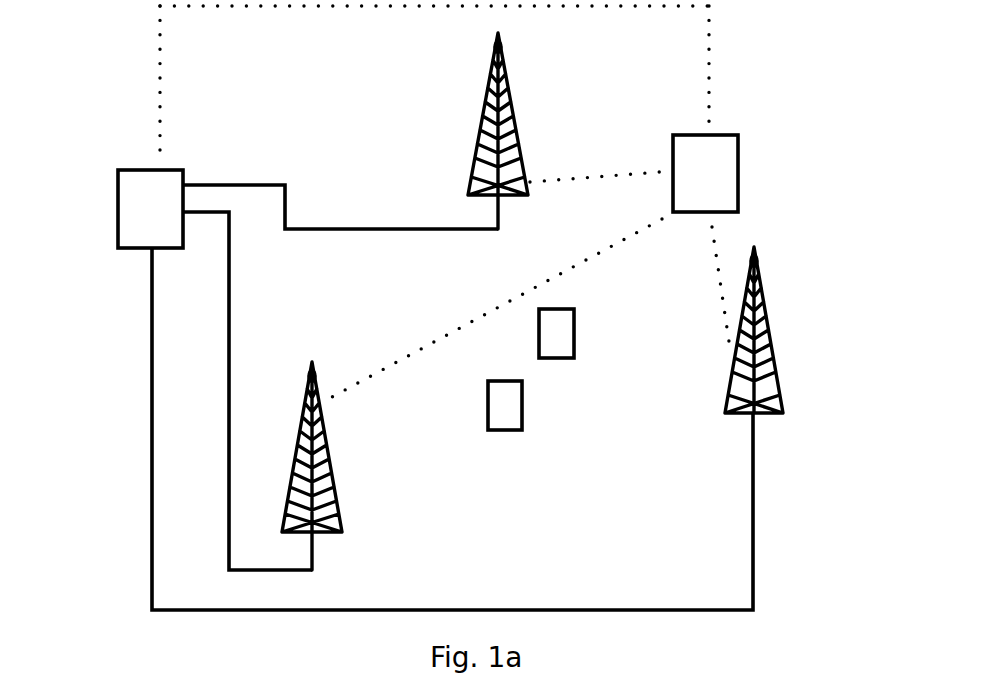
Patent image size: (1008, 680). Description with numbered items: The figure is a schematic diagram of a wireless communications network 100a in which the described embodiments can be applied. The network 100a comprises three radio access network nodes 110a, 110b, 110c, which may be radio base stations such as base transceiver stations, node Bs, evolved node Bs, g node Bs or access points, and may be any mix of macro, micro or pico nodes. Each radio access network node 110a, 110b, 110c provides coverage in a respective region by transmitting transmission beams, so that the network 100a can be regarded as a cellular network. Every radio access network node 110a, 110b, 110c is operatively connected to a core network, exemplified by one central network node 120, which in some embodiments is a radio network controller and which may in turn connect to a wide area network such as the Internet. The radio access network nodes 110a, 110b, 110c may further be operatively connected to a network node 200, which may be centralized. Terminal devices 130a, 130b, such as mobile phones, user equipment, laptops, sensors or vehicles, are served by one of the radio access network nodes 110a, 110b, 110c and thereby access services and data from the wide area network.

The wireless communications network 100a is at (806, 63).
The radio access network node 110a is at (345, 507).
The radio access network node 110b is at (507, 92).
The radio access network node 110c is at (765, 320).
The central network node 120 is at (738, 165).
The terminal device 130a is at (555, 340).
The terminal device 130b is at (503, 412).
The network node 200 is at (118, 212).